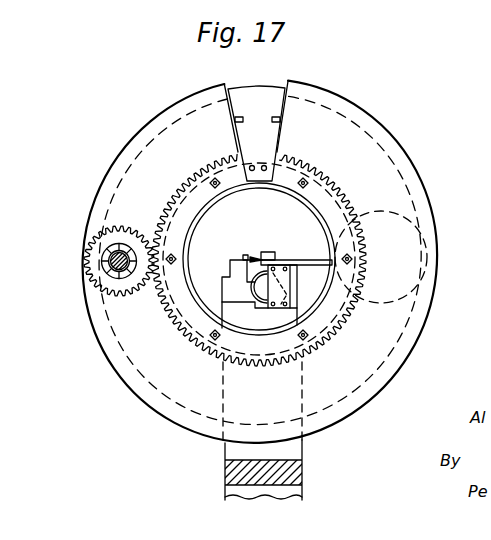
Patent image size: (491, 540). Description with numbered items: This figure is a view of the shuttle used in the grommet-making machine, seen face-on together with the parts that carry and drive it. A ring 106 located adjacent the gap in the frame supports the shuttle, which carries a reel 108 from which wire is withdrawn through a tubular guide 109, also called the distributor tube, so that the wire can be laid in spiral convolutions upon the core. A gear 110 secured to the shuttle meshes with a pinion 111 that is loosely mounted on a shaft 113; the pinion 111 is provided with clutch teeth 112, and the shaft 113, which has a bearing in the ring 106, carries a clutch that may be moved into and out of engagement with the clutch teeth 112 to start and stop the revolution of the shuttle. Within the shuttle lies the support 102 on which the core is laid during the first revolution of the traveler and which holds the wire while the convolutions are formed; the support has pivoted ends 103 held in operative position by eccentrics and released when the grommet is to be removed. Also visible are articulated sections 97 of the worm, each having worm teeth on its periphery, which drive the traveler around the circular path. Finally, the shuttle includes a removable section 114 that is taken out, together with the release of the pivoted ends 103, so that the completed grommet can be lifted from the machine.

The articulated sections 97 is at (262, 287).
The support 102 is at (232, 285).
The pivoted ends 103 is at (268, 252).
The ring 106 is at (426, 331).
The reel 108 is at (378, 305).
The tubular guide 109 is at (308, 258).
The gear 110 is at (181, 188).
The pinion 111 is at (126, 228).
The clutch teeth 112 is at (128, 275).
The shaft 113 is at (120, 273).
The section 114 is at (258, 100).